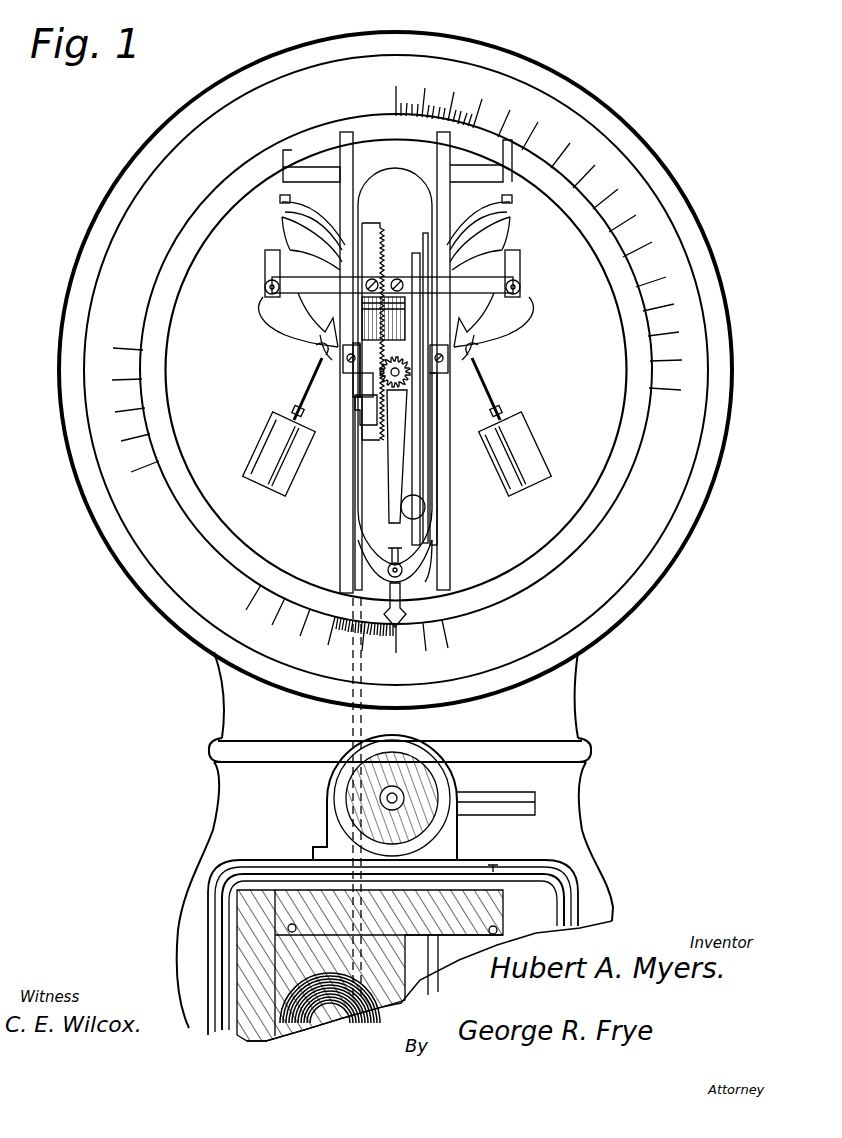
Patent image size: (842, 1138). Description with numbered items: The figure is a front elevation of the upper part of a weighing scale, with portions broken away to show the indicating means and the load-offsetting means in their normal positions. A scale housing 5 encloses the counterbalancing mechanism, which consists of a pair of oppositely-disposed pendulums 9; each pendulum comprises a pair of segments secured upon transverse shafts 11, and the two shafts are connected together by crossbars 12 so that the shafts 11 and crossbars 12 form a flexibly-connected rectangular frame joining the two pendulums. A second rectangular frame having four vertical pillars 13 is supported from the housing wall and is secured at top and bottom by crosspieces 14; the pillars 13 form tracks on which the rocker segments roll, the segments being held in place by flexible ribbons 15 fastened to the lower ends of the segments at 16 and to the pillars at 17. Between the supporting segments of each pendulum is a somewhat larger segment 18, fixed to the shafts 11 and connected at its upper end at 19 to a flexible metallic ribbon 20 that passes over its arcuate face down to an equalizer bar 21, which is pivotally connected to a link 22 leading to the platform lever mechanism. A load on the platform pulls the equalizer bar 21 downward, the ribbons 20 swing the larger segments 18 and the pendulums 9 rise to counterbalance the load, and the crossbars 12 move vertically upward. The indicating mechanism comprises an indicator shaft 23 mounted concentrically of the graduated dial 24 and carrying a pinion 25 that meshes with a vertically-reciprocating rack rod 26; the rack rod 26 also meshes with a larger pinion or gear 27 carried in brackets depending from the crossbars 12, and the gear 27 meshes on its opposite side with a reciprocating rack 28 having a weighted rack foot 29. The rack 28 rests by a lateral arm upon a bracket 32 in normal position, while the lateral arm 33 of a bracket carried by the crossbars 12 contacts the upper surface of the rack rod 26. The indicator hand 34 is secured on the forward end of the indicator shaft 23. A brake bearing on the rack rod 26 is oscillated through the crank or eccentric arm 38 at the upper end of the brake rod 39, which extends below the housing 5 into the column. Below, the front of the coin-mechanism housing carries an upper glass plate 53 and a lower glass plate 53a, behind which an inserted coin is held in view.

The scale housing 5 is at (706, 485).
The pendulums 9 is at (528, 432).
The transverse shafts 11 is at (262, 287).
The crossbars 12 is at (512, 270).
The vertical pillars 13 is at (345, 195).
The crosspieces 14 is at (425, 580).
The flexible ribbons 15 is at (450, 196).
The ribbon lower fastening 16 is at (480, 330).
The ribbon upper fastening 17 is at (455, 160).
The larger segment 18 is at (500, 225).
The ribbon connection 19 is at (502, 200).
The flexible metallic ribbon 20 is at (283, 203).
The equalizer bar 21 is at (420, 245).
The link 22 is at (360, 570).
The indicator shaft 23 is at (408, 372).
The dial 24 is at (700, 425).
The pinion 25 is at (400, 385).
The rack rod 26 is at (362, 490).
The larger pinion or gear 27 is at (414, 268).
The rack 28 is at (415, 460).
The weighted rack foot 29 is at (418, 500).
The bracket 32 is at (418, 212).
The lateral arm 33 is at (372, 223).
The indicator hand 34 is at (404, 615).
The crank or eccentric arm 38 is at (365, 425).
The brake rod 39 is at (358, 530).
The upper glass plate 53 is at (455, 770).
The lower glass plate 53a is at (300, 885).